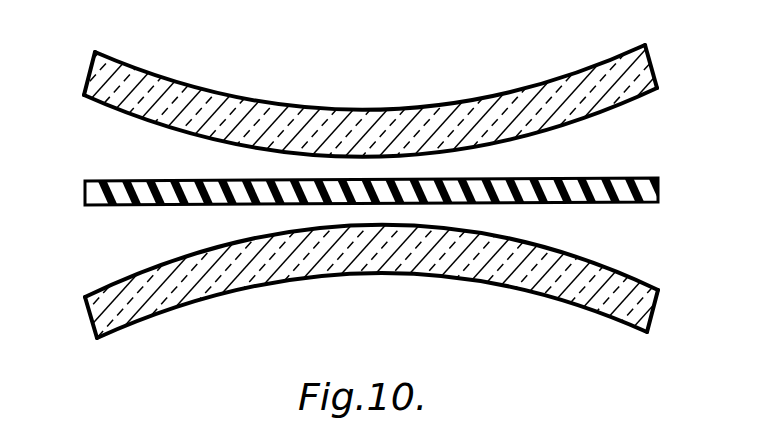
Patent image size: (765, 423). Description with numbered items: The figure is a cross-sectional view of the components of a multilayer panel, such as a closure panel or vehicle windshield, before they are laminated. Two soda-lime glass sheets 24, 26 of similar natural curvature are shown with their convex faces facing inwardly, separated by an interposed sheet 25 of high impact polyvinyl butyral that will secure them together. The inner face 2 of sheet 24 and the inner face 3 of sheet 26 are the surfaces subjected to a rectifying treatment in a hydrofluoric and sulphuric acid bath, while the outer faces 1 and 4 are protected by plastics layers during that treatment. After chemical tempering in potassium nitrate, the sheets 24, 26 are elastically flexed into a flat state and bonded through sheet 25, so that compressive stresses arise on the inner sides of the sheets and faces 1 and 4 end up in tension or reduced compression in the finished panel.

The face 1 is at (617, 320).
The face 2 is at (627, 275).
The face 3 is at (620, 106).
The face 4 is at (598, 63).
The glass sheet 24 is at (382, 202).
The interposed sheet 25 is at (95, 188).
The glass sheet 26 is at (382, 180).